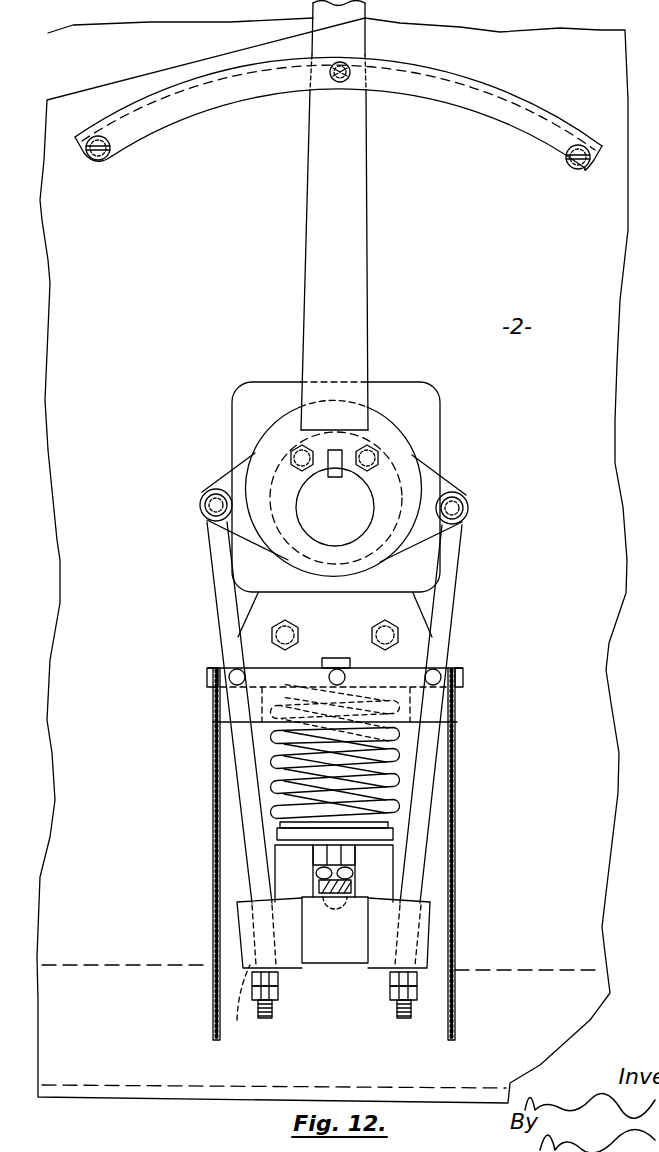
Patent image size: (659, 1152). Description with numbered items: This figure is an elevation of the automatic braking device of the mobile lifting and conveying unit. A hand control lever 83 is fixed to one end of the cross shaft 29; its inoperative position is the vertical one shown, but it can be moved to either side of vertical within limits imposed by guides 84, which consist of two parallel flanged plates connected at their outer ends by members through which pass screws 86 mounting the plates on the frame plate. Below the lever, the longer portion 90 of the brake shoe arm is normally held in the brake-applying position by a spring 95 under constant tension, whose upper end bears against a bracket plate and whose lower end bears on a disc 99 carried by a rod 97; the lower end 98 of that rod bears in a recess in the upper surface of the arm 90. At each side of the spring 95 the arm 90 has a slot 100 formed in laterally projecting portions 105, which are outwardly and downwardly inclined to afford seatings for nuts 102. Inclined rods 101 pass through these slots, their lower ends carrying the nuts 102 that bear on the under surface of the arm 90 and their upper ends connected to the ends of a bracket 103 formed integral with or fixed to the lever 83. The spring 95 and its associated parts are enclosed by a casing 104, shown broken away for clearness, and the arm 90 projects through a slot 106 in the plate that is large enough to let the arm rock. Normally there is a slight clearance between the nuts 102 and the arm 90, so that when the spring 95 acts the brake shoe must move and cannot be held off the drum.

The cross shaft 29 is at (357, 497).
The hand control lever 83 is at (350, 315).
The guides 84 is at (445, 98).
The screws 86 is at (100, 163).
The portion of the brake shoe arm 90 is at (337, 967).
The spring 95 is at (393, 757).
The rod 97 is at (332, 657).
The lower end of the rod 98 is at (320, 888).
The disc 99 is at (388, 837).
The slot 100 is at (240, 1006).
The rods 101 is at (227, 608).
The nuts 102 is at (273, 988).
The bracket 103 is at (430, 482).
The casing 104 is at (453, 808).
The laterally projecting portions 105 is at (238, 905).
The slot in the plate 106 is at (388, 887).